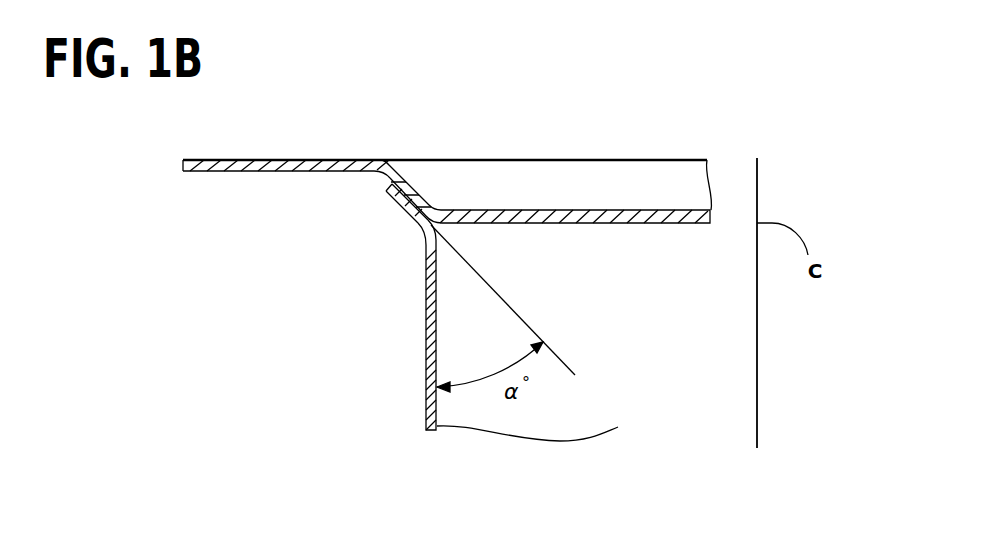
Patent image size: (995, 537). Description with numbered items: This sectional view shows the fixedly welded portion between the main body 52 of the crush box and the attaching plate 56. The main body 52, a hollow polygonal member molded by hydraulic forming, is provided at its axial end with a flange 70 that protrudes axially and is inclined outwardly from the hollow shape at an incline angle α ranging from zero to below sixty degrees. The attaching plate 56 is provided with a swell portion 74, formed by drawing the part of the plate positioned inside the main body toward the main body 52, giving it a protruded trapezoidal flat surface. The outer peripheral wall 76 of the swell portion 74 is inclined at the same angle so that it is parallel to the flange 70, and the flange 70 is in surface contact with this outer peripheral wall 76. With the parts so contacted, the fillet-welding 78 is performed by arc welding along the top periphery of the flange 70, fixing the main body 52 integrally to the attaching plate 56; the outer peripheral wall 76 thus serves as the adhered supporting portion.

The main body 52 is at (403, 397).
The attaching plate 56 is at (655, 147).
The flange 70 is at (400, 207).
The swell portion 74 is at (621, 223).
The outer peripheral wall 76 is at (400, 207).
The fillet-welding 78 is at (392, 181).